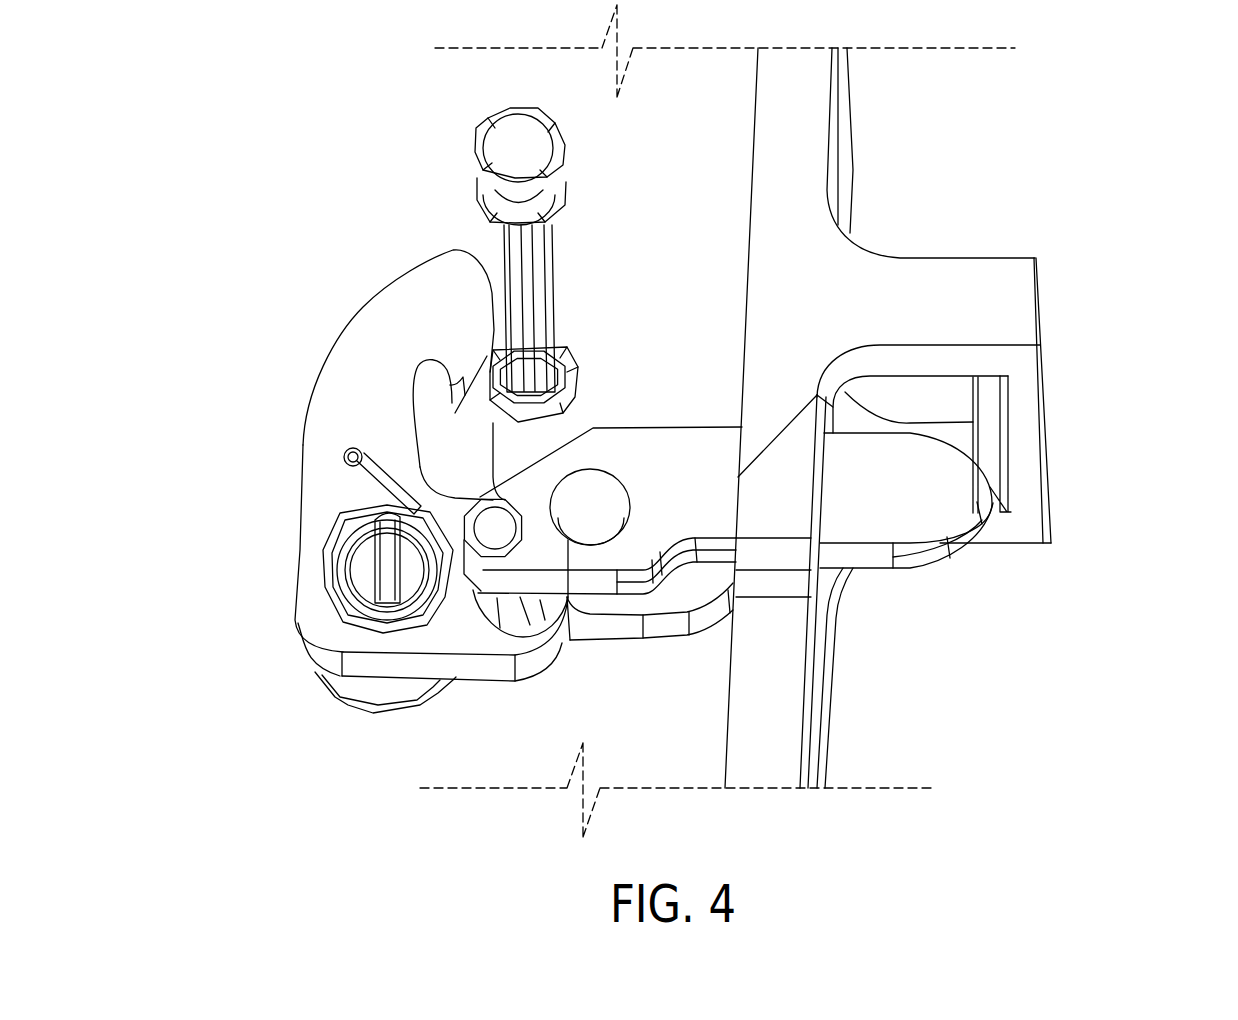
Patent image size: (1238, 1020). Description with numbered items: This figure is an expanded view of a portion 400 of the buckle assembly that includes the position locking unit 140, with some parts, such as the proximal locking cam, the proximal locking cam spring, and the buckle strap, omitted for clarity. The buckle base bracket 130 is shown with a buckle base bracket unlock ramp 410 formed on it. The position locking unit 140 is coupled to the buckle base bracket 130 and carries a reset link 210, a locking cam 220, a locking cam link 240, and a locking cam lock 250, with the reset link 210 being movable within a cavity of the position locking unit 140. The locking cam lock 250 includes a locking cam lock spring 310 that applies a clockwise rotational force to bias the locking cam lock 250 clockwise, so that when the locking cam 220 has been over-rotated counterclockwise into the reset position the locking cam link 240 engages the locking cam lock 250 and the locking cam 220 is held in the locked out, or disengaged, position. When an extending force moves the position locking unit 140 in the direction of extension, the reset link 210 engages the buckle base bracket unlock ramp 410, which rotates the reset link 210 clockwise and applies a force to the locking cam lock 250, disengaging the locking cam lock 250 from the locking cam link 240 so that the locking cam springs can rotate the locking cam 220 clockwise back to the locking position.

The portion 400 is at (1128, 131).
The buckle base bracket 130 is at (800, 143).
The buckle base bracket unlock ramp 410 is at (1040, 381).
The position locking unit 140 is at (374, 227).
The reset link 210 is at (962, 544).
The locking cam 220 is at (597, 423).
The locking cam link 240 is at (550, 250).
The locking cam lock 250 is at (356, 313).
The locking cam lock spring 310 is at (320, 550).